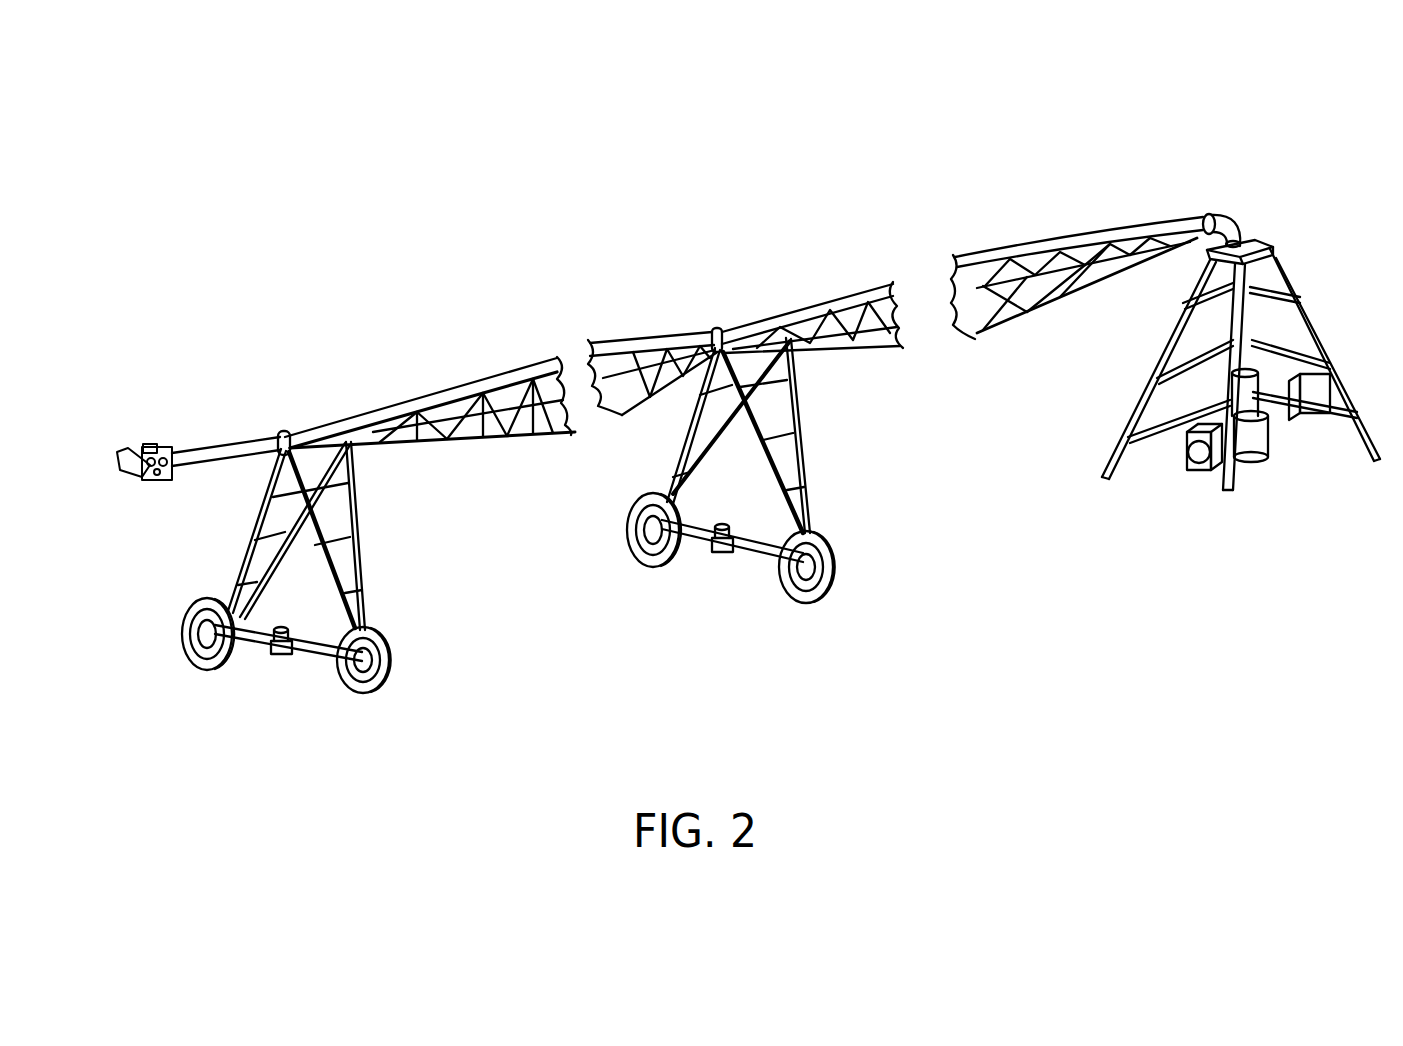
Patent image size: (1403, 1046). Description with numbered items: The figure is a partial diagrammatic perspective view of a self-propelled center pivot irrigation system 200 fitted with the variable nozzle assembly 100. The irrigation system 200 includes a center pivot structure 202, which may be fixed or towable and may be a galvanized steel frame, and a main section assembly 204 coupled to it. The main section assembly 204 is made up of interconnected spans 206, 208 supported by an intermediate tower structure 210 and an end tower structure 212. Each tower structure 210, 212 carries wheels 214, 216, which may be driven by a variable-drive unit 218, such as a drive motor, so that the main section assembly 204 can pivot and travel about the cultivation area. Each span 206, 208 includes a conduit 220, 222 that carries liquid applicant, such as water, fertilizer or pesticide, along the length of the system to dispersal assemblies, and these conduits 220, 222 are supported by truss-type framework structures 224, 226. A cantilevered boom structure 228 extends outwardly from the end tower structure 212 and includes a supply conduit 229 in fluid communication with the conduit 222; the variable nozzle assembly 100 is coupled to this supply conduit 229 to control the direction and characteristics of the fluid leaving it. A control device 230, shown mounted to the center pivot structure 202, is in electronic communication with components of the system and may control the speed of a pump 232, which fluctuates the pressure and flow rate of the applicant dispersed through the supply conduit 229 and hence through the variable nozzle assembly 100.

The variable nozzle assembly 100 is at (119, 492).
The center pivot irrigation system 200 is at (1110, 186).
The center pivot structure 202 is at (1307, 300).
The main section assembly 204 is at (765, 296).
The span 206 is at (1022, 230).
The span 208 is at (484, 353).
The tower structure 210 is at (803, 433).
The end tower structure 212 is at (357, 537).
The wheel 214 is at (390, 666).
The wheel 216 is at (238, 657).
The variable-drive unit 218 is at (275, 657).
The conduit 220 is at (860, 297).
The conduit 222 is at (388, 392).
The truss-type framework structure 224 is at (1040, 313).
The truss-type framework structure 226 is at (501, 448).
The cantilevered boom structure 228 is at (238, 443).
The supply conduit 229 is at (189, 447).
The control device 230 is at (1313, 393).
The pump 232 is at (1183, 457).